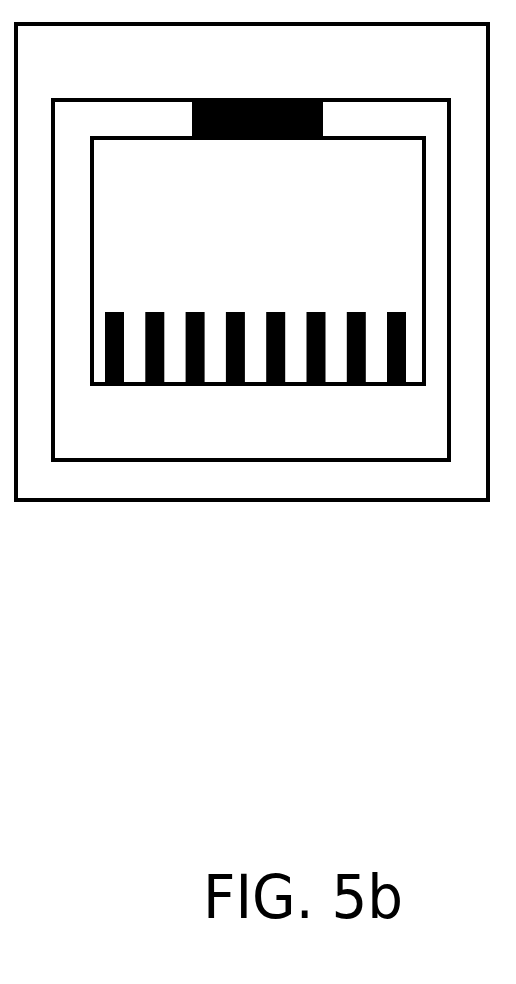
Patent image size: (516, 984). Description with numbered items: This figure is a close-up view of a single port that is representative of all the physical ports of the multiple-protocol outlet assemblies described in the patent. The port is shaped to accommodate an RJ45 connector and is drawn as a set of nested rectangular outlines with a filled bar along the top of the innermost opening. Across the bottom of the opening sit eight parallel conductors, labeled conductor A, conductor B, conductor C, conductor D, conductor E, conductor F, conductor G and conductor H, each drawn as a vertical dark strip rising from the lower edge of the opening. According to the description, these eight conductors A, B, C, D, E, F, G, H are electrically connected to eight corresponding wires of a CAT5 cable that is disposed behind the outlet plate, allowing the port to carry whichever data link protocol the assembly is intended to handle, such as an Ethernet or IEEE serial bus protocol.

The conductor A is at (116, 373).
The conductor B is at (156, 373).
The conductor C is at (197, 373).
The conductor D is at (237, 373).
The conductor E is at (276, 373).
The conductor F is at (316, 373).
The conductor G is at (357, 373).
The conductor H is at (397, 373).